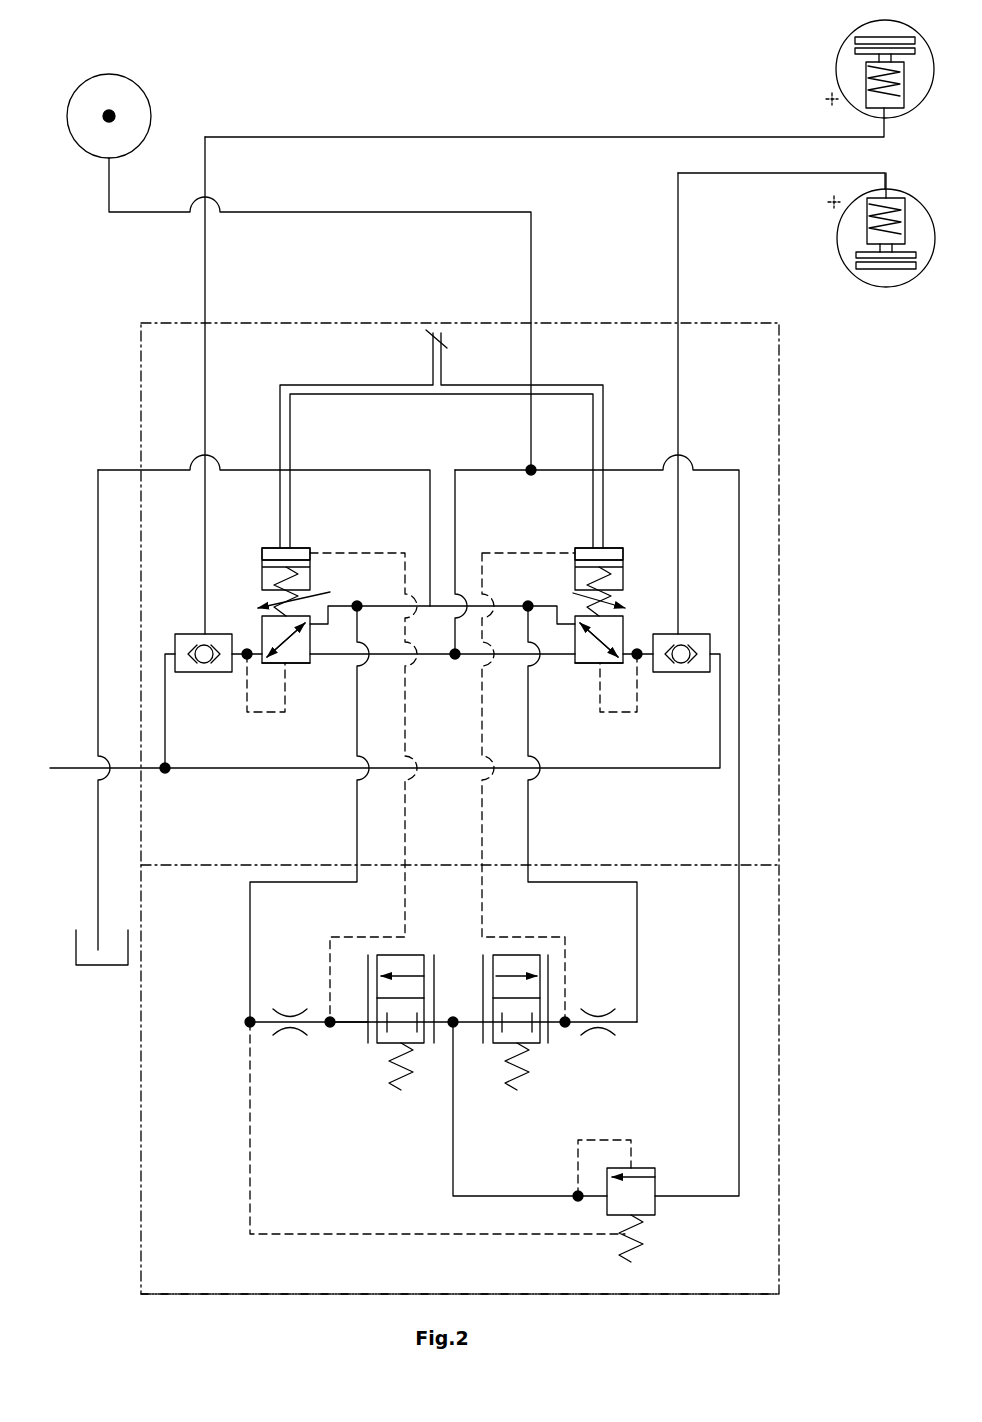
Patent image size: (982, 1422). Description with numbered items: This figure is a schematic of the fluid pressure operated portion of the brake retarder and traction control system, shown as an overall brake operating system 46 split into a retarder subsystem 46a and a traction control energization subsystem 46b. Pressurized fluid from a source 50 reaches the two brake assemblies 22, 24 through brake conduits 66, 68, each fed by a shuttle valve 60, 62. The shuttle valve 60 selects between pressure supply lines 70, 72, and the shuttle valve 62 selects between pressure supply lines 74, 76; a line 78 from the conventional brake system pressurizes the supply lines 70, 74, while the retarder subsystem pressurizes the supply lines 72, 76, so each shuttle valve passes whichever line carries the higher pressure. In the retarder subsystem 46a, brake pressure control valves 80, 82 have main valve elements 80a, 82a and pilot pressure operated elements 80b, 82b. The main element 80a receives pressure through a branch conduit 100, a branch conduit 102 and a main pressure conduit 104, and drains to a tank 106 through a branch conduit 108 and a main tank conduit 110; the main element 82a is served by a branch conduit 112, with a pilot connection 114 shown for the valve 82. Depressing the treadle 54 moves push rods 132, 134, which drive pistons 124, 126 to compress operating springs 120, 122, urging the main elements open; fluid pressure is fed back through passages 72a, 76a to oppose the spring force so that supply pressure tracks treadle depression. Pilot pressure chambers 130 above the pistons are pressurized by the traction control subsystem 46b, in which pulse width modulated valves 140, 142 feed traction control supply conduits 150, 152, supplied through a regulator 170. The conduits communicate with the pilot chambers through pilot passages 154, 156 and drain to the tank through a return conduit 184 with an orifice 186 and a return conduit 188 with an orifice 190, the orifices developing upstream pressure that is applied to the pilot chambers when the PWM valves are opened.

The brake assembly 22 is at (836, 70).
The brake assembly 24 is at (837, 247).
The brake operating system 46 is at (832, 746).
The retarder subsystem 46a is at (778, 482).
The traction control energization subsystem 46b is at (779, 982).
The source of pressurized fluid 50 is at (151, 110).
The treadle 54 is at (440, 362).
The shuttle valve 60 is at (183, 637).
The shuttle valve 62 is at (700, 634).
The brake conduit 66 is at (607, 137).
The brake conduit 68 is at (770, 173).
The pressure supply line 70 is at (167, 743).
The pressure supply line 72 is at (240, 660).
The passage 72a is at (251, 712).
The pressure supply line 74 is at (580, 768).
The pressure supply line 76 is at (643, 657).
The passage 76a is at (630, 712).
The line 78 is at (72, 766).
The brake pressure control valve 80 is at (225, 578).
The main valve element 80a is at (294, 658).
The pilot pressure operated element 80b is at (298, 546).
The brake pressure control valve 82 is at (640, 572).
The main valve element 82a is at (585, 658).
The pilot pressure operated element 82b is at (588, 538).
The branch conduit 100 is at (335, 656).
The branch conduit 102 is at (505, 468).
The main pressure conduit 104 is at (375, 212).
The tank 106 is at (95, 968).
The branch conduit 108 is at (393, 570).
The main tank conduit 110 is at (350, 470).
The branch conduit 112 is at (473, 657).
The pilot connection 114 is at (510, 605).
The operating spring 120 is at (300, 600).
The operating spring 122 is at (605, 600).
The piston 124 is at (270, 553).
The piston 126 is at (608, 568).
The pilot pressure chamber 130 is at (303, 553).
The push rod 132 is at (278, 405).
The push rod 134 is at (605, 407).
The pulse width modulated valve 140 is at (428, 954).
The pulse width modulated valve 142 is at (564, 955).
The traction control supply conduit 150 is at (355, 1026).
The traction control supply conduit 152 is at (553, 1030).
The pilot passage 154 is at (410, 832).
The pilot passage 156 is at (487, 834).
The regulator 170 is at (663, 1167).
The return conduit 184 is at (248, 953).
The orifice 186 is at (290, 1000).
The return conduit 188 is at (640, 990).
The orifice 190 is at (600, 1040).